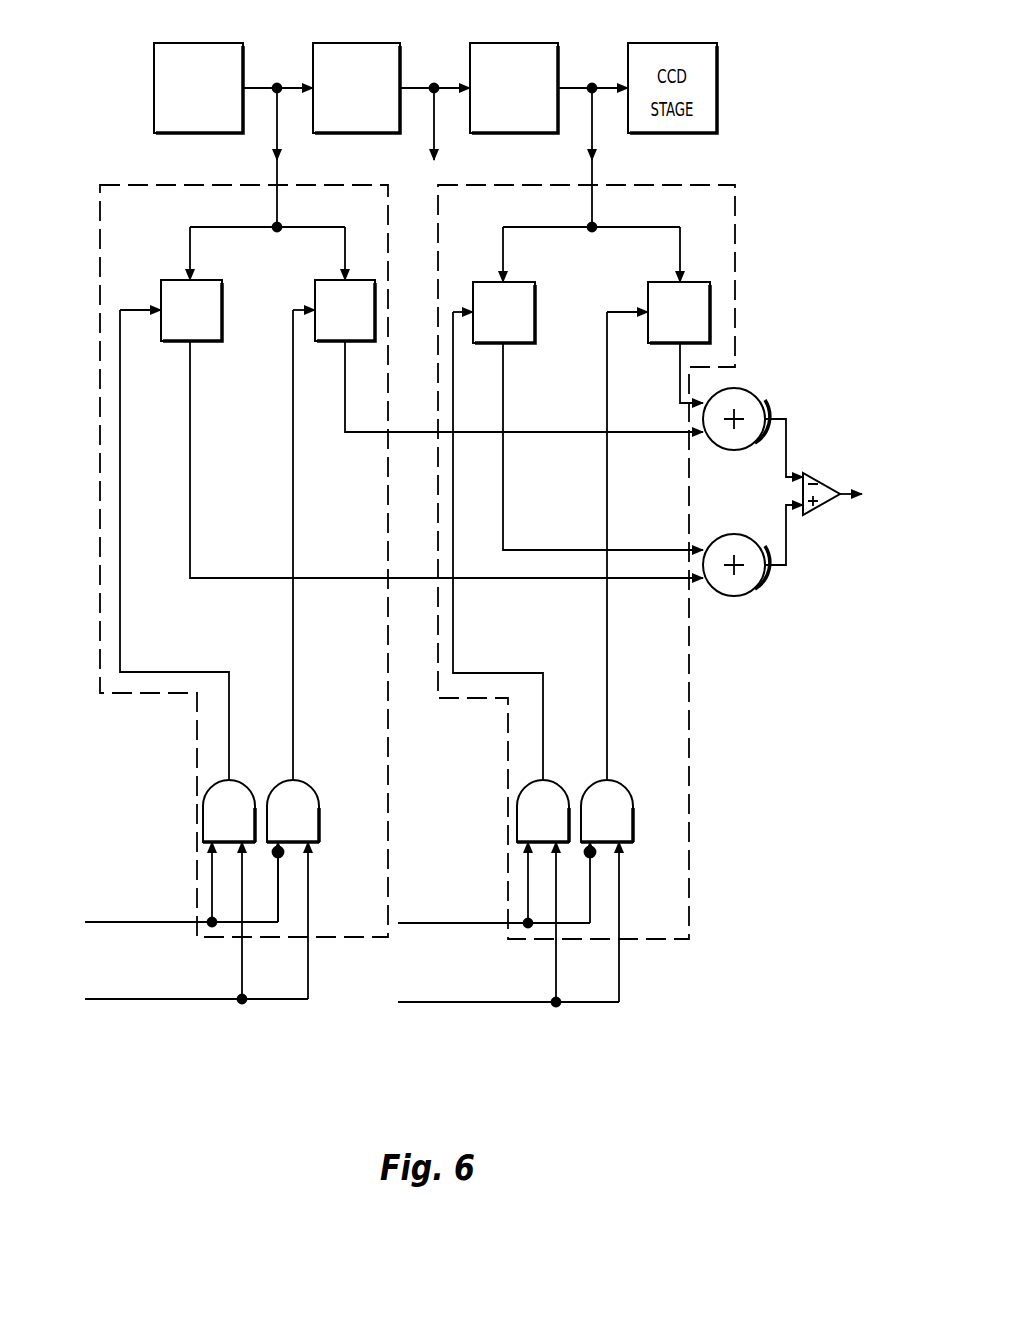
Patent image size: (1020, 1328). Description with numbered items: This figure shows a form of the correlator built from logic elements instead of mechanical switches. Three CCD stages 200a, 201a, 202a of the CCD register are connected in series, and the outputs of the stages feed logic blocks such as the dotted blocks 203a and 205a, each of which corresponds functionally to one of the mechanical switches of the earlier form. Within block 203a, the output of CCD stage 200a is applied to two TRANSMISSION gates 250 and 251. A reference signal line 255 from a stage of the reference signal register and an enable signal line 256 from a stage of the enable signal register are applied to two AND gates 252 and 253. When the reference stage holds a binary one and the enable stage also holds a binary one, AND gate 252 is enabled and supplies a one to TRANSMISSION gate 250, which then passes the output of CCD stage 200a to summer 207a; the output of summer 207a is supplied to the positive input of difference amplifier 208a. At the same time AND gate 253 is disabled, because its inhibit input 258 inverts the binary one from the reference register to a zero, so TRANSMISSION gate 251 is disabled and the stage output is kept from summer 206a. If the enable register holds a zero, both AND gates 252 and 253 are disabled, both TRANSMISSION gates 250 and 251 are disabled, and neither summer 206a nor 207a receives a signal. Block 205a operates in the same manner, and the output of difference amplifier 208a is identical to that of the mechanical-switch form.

The CCD stage 200a is at (191, 43).
The CCD stage 201a is at (347, 43).
The CCD stage 202a is at (504, 43).
The logic block 203a is at (162, 185).
The logic block 205a is at (517, 185).
The summer 206a is at (751, 392).
The summer 207a is at (712, 534).
The difference amplifier 208a is at (806, 470).
The transmission gate 250 is at (198, 280).
The transmission gate 251 is at (333, 282).
The AND gate 252 is at (232, 781).
The AND gate 253 is at (300, 781).
The reference signal input line 255 is at (152, 923).
The enable signal input line 256 is at (182, 1000).
The inhibit input 258 is at (270, 853).